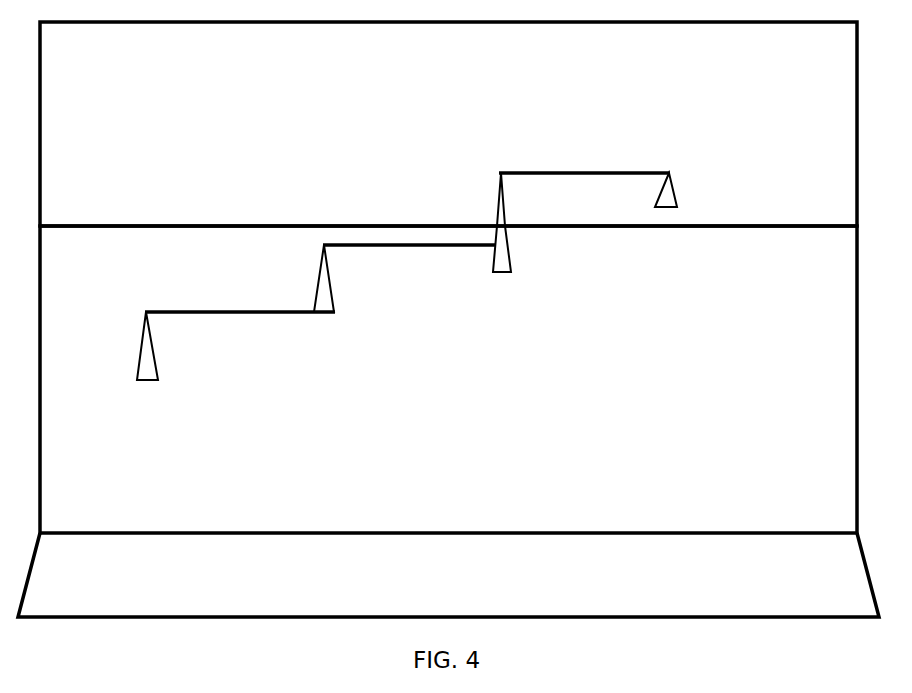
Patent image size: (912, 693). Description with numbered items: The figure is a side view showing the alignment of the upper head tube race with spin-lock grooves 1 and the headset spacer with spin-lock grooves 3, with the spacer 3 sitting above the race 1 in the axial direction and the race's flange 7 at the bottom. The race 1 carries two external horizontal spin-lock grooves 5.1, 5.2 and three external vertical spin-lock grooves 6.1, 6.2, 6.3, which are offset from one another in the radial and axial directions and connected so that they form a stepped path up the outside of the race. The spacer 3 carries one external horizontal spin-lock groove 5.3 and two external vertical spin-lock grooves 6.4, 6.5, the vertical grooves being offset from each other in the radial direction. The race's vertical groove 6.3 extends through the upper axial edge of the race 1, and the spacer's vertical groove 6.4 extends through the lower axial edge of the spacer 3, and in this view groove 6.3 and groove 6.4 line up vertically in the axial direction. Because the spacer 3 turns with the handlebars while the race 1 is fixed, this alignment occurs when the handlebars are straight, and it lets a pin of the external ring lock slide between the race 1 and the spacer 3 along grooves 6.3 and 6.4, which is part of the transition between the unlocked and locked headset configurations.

The upper head tube race with spin-lock grooves 1 is at (448, 379).
The headset spacer with spin-lock grooves 3 is at (448, 124).
The flange 7 is at (448, 575).
The external horizontal spin-lock groove 5.1 is at (240, 292).
The external horizontal spin-lock groove 5.2 is at (409, 273).
The external horizontal spin-lock groove 5.3 is at (584, 151).
The external vertical spin-lock groove 6.1 is at (119, 374).
The external vertical spin-lock groove 6.2 is at (333, 311).
The external vertical spin-lock groove 6.3 is at (511, 286).
The external vertical spin-lock groove 6.4 is at (468, 192).
The external vertical spin-lock groove 6.5 is at (690, 238).